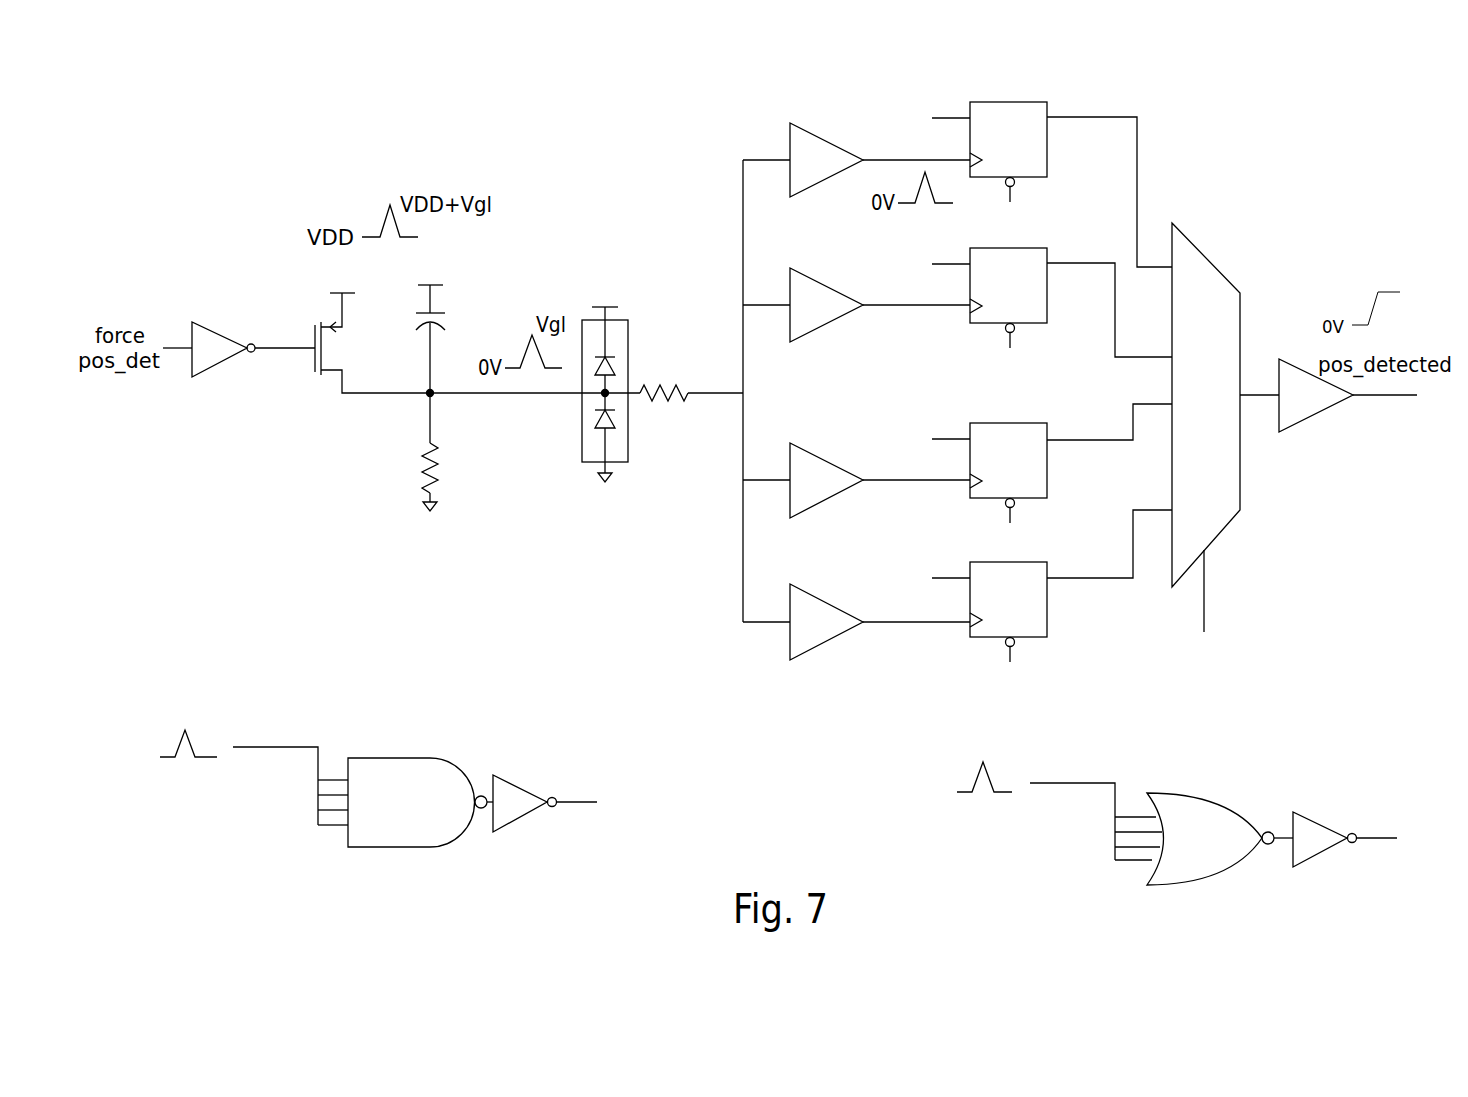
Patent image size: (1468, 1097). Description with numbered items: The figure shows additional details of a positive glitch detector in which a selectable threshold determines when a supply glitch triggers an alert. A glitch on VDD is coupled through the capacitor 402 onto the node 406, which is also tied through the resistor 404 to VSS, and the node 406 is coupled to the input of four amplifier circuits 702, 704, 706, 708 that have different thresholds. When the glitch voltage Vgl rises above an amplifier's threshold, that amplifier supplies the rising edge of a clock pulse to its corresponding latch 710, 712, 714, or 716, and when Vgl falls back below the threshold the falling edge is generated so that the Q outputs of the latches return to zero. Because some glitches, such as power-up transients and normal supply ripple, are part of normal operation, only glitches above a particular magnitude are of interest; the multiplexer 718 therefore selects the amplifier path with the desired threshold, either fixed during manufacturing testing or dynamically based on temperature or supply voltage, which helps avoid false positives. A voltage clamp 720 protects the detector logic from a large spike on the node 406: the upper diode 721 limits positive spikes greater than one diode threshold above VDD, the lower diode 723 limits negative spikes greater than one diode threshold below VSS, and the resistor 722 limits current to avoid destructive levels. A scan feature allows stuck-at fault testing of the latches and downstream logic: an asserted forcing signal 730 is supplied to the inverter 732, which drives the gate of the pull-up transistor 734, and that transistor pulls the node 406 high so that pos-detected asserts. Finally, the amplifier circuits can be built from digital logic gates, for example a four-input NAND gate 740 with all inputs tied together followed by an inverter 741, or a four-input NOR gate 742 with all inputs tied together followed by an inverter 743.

The capacitor 402 is at (447, 320).
The resistor 404 is at (436, 450).
The node 406 is at (428, 392).
The amplifier circuit 702 is at (810, 130).
The amplifier circuit 704 is at (813, 274).
The amplifier circuit 706 is at (823, 450).
The amplifier circuit 708 is at (818, 590).
The latch 710 is at (1048, 104).
The latch 712 is at (1036, 247).
The latch 714 is at (1036, 422).
The latch 716 is at (1048, 560).
The multiplexer 718 is at (1206, 258).
The voltage clamp 720 is at (595, 390).
The upper diode 721 is at (596, 372).
The resistor 722 is at (680, 386).
The lower diode 723 is at (614, 420).
The forcing signal 730 is at (168, 346).
The inverter 732 is at (207, 378).
The pull-up transistor 734 is at (314, 335).
The four input NAND gate 740 is at (422, 758).
The inverter 741 is at (514, 783).
The four input NOR gate 742 is at (1214, 803).
The inverter 743 is at (1318, 823).